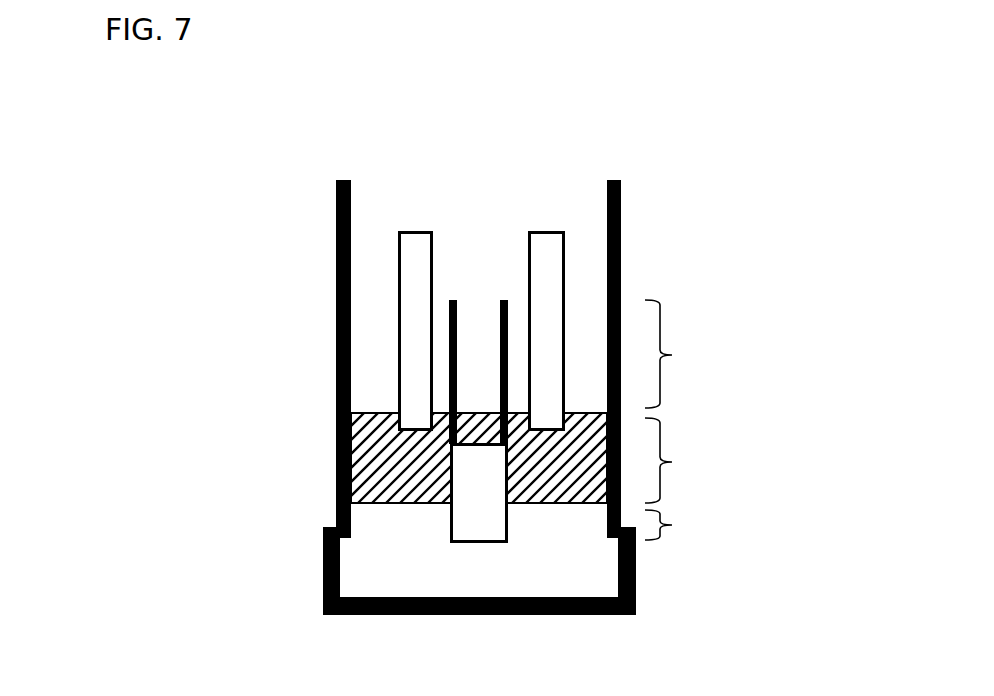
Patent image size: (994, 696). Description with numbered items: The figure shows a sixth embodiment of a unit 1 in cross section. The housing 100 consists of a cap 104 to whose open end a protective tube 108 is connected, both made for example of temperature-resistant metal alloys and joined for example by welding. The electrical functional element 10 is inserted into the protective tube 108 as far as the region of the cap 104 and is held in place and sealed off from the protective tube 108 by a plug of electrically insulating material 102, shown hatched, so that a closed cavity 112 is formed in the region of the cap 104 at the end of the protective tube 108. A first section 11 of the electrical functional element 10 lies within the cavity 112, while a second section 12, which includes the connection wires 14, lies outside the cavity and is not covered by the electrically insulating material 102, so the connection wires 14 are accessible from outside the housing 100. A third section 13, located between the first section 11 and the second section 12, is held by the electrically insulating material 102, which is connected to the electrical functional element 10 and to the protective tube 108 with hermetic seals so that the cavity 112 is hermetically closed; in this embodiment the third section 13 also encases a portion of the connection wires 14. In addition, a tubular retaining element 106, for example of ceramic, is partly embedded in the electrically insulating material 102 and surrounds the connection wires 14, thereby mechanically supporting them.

The unit 1 is at (667, 137).
The housing 100 is at (635, 240).
The electrical functional element 10 is at (510, 380).
The connection wires 14 is at (450, 318).
The retaining element 106 is at (408, 355).
The protective tube 108 is at (337, 432).
The electrically insulating material 102 is at (337, 495).
The cap 104 is at (323, 562).
The cavity 112 is at (548, 562).
The first section 11 is at (679, 525).
The second section 12 is at (679, 354).
The third section 13 is at (679, 460).